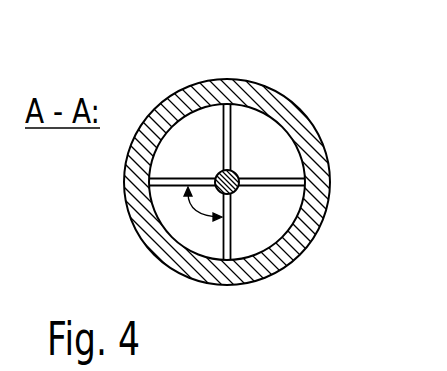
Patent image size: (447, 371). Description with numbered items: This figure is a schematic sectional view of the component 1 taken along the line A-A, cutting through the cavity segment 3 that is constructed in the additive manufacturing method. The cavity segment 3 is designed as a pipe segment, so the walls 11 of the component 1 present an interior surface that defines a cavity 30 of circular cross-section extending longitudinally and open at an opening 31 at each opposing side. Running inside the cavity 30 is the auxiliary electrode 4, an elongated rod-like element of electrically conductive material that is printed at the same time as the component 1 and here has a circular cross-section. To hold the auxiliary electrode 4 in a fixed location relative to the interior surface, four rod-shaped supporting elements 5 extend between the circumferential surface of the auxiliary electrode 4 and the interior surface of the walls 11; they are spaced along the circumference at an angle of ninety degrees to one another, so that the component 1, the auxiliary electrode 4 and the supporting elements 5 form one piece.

The component 1 is at (275, 73).
The cavity segment 3 is at (205, 81).
The auxiliary electrode 4 is at (238, 178).
The supporting elements 5 is at (177, 176).
The walls 11 is at (219, 284).
The cavity 30 is at (208, 155).
The opening 31 is at (250, 257).